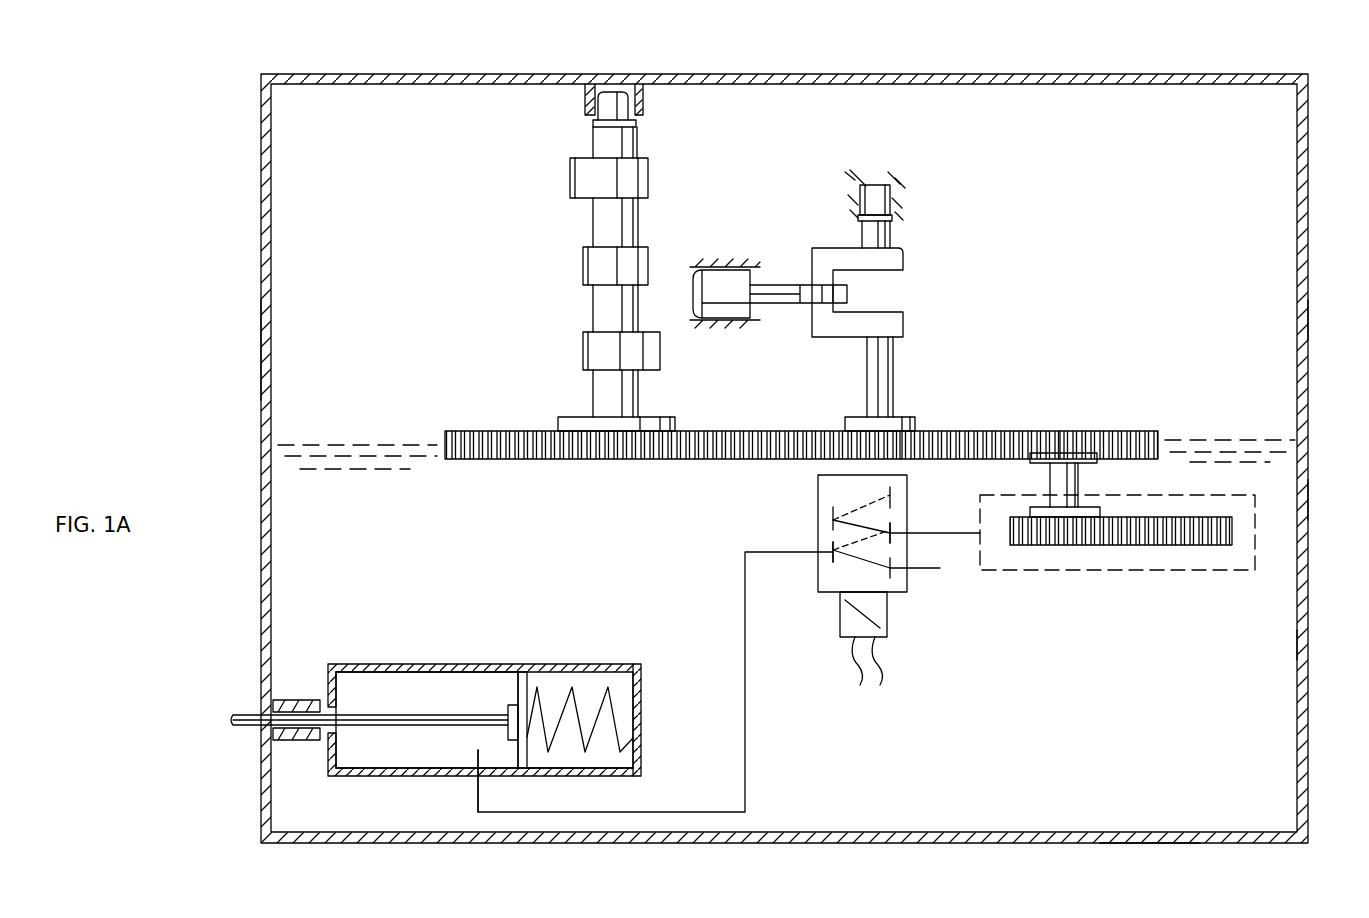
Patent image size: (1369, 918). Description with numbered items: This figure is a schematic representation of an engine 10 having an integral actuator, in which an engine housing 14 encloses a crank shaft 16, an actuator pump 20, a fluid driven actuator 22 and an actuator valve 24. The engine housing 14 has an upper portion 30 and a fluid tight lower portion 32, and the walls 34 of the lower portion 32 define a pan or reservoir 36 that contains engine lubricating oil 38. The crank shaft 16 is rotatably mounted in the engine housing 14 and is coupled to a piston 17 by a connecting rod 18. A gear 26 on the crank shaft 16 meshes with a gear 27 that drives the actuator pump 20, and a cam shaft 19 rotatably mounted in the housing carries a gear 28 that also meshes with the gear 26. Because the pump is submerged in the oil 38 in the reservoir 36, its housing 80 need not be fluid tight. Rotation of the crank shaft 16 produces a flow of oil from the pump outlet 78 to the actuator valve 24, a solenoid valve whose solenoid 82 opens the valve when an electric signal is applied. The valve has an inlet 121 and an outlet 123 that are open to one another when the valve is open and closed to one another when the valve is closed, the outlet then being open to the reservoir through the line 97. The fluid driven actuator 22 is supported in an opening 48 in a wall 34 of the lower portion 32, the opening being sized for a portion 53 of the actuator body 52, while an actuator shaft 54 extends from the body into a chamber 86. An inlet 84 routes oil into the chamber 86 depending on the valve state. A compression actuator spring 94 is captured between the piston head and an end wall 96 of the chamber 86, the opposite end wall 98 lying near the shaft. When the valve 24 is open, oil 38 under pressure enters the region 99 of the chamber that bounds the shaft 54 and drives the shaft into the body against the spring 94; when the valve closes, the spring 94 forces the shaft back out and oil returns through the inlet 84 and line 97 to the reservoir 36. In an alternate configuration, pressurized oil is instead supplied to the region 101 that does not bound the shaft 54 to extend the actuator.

The engine 10 is at (728, 66).
The engine housing 14 is at (262, 350).
The crank shaft 16 is at (893, 262).
The piston 17 is at (722, 280).
The connecting rod 18 is at (768, 303).
The cam shaft 19 is at (603, 232).
The actuator pump 20 is at (1097, 560).
The fluid driven actuator 22 is at (352, 658).
The actuator valve 24 is at (825, 497).
The gear on the crank shaft 26 is at (925, 434).
The gear that drives the pump 27 is at (1080, 431).
The gear on the cam shaft 28 is at (548, 440).
The upper portion of the engine housing 30 is at (1308, 318).
The lower portion of the engine housing 32 is at (1308, 500).
The wall of the lower portion 34 is at (1302, 658).
The pan or reservoir 36 is at (1142, 800).
The engine lubricating oil 38 is at (1200, 440).
The opening for the fluid driven actuator 48 is at (270, 710).
The actuator body 52 is at (335, 688).
The portion of the actuator body 53 is at (315, 741).
The actuator shaft 54 is at (418, 712).
The outlet of the actuator pump 78 is at (982, 535).
The housing of the actuator pump 80 is at (1012, 497).
The solenoid 82 is at (880, 610).
The inlet into the chamber 84 is at (480, 777).
The chamber 86 is at (478, 690).
The compression actuator spring 94 is at (545, 705).
The end wall of the chamber 96 is at (628, 690).
The line 97 is at (925, 570).
The opposite end wall of the chamber 98 is at (338, 684).
The region of the chamber bounding the shaft 99 is at (340, 760).
The region of the chamber not bounding the shaft 101 is at (610, 755).
The valve inlet 121 is at (893, 530).
The valve outlet 123 is at (835, 550).